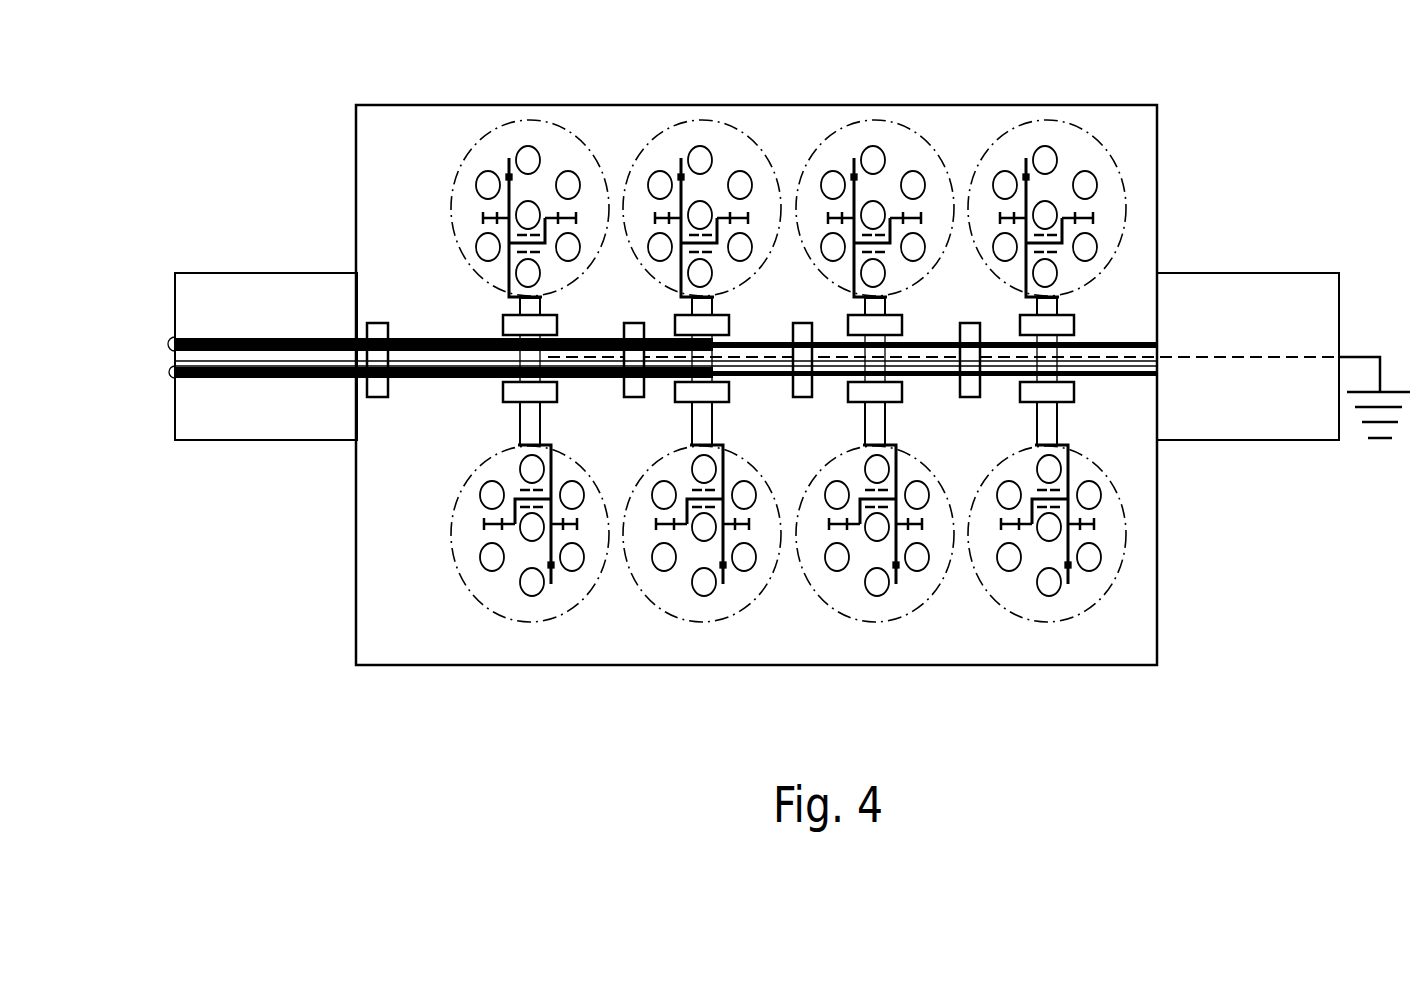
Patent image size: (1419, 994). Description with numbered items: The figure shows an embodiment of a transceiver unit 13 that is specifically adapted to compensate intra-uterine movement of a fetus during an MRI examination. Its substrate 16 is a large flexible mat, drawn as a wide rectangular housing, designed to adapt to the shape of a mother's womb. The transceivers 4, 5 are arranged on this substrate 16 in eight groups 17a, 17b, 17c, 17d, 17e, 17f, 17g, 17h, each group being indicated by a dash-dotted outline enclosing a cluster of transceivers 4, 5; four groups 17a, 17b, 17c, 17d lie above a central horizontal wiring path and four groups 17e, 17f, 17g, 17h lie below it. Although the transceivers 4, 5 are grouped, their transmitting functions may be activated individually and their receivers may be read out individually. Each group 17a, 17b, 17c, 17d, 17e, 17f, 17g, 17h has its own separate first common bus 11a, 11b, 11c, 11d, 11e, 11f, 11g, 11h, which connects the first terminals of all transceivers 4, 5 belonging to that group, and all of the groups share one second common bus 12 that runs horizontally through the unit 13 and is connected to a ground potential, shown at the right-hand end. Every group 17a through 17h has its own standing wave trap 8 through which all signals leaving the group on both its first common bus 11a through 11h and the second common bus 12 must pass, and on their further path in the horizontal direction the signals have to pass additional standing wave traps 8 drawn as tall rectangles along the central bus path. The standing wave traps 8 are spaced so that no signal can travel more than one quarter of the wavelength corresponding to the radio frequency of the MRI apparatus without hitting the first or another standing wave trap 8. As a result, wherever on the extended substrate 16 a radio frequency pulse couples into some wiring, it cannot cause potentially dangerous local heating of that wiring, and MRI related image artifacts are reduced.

The transceiver 4 is at (788, 321).
The transceiver 5 is at (568, 180).
The standing wave trap 8 is at (378, 322).
The first common bus 11a is at (512, 300).
The first common bus 11b is at (692, 300).
The first common bus 11c is at (865, 300).
The first common bus 11d is at (1037, 300).
The first common bus 11e is at (1037, 428).
The first common bus 11f is at (865, 428).
The first common bus 11g is at (692, 428).
The first common bus 11h is at (520, 428).
The second common bus 12 is at (541, 305).
The transceiver unit 13 is at (1226, 706).
The substrate 16 is at (350, 555).
The group 17a is at (473, 147).
The group 17b is at (645, 147).
The group 17c is at (818, 147).
The group 17d is at (990, 147).
The group 17e is at (1050, 623).
The group 17f is at (878, 623).
The group 17g is at (705, 623).
The group 17h is at (533, 623).